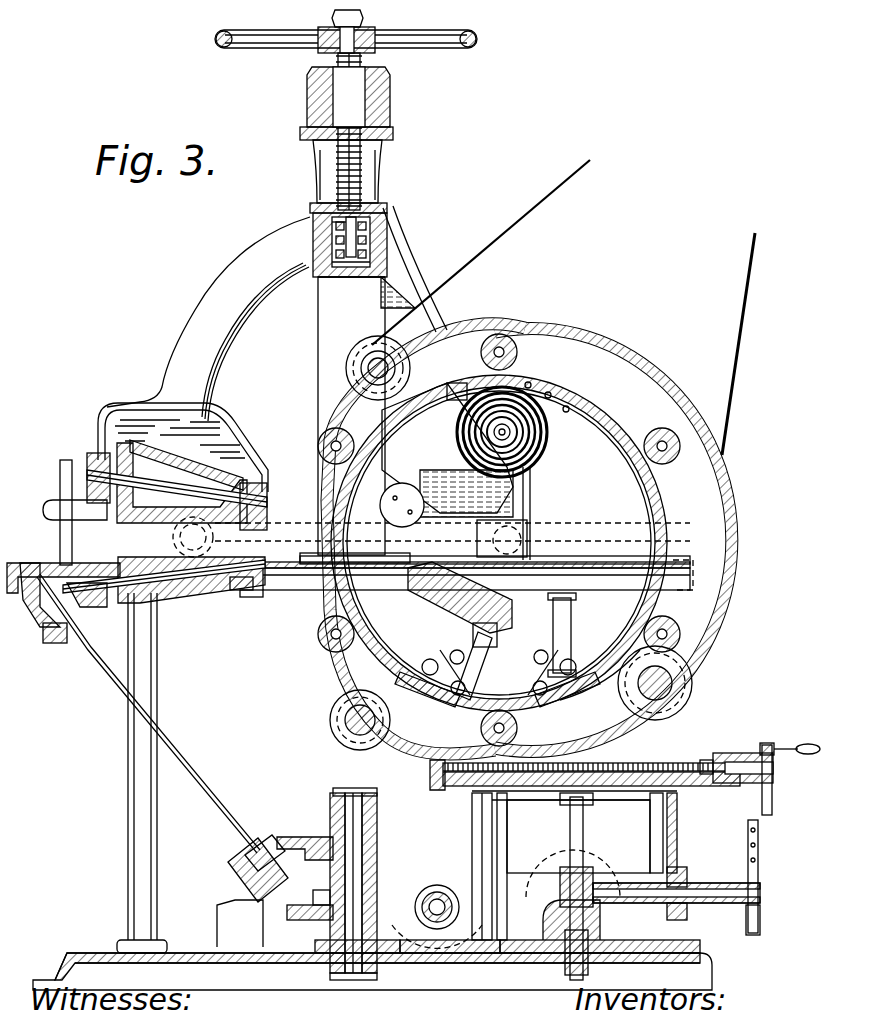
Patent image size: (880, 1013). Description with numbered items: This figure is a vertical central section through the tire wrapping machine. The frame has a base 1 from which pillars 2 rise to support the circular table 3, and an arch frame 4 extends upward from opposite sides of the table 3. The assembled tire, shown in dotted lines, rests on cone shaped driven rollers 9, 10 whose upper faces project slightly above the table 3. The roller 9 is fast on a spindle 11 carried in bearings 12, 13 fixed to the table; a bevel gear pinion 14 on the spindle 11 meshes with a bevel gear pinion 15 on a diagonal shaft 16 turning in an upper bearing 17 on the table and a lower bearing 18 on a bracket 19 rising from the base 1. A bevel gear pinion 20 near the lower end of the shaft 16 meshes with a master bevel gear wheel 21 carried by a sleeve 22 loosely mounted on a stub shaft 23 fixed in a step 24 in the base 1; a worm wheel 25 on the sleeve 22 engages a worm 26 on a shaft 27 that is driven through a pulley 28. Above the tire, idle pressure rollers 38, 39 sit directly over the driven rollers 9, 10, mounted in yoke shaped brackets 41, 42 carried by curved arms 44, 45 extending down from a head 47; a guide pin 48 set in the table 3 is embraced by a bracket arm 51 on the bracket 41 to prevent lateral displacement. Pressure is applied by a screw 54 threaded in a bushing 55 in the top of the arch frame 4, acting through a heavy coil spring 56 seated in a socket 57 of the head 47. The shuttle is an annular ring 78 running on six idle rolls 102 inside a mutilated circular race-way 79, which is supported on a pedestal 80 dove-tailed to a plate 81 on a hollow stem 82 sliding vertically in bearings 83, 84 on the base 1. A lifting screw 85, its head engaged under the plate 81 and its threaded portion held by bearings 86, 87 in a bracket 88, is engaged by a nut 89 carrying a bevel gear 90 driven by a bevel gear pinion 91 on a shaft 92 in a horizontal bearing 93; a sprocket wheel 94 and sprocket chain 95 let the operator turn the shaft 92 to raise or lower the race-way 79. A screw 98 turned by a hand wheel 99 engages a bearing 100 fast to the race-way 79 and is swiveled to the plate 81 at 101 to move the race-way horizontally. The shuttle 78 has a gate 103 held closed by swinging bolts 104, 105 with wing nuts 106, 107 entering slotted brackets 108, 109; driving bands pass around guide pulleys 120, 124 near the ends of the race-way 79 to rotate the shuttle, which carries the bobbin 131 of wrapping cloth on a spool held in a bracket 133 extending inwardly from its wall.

The base 1 is at (85, 953).
The pillars 2 is at (157, 712).
The table 3 is at (560, 565).
The arch frame 4 is at (318, 335).
The cone shaped roller 9 is at (205, 598).
The cone shaped roller 10 is at (462, 600).
The spindle 11 is at (237, 590).
The bearing 12 is at (258, 597).
The bearing 13 is at (105, 605).
The bevel gear pinion 14 is at (70, 570).
The bevel gear pinion 15 is at (58, 643).
The diagonal shaft 16 is at (206, 815).
The bearing 17 is at (35, 615).
The bearing 18 is at (245, 893).
The bracket 19 is at (240, 920).
The bevel gear pinion 20 is at (262, 840).
The master bevel gear wheel 21 is at (300, 840).
The sleeve 22 is at (332, 795).
The stub shaft 23 is at (352, 825).
The step 24 is at (318, 963).
The worm wheel 25 is at (306, 912).
The worm 26 is at (437, 915).
The shaft 27 is at (400, 960).
The pulley 28 is at (455, 786).
The idle pulley 38 is at (200, 472).
The idle pulley 39 is at (453, 513).
The yoke shaped bracket 41 is at (105, 420).
The yoke shaped bracket 42 is at (456, 471).
The curved arm 44 is at (200, 303).
The curved arm 45 is at (422, 272).
The head 47 is at (387, 232).
The guide pin 48 is at (63, 465).
The bracket arm 51 is at (55, 505).
The screw 54 is at (345, 165).
The screw threaded bushing 55 is at (390, 100).
The coil spring 56 is at (322, 277).
The socket 57 is at (336, 246).
The annular ring shuttle 78 is at (640, 408).
The race-way 79 is at (725, 488).
The pedestal 80 is at (630, 765).
The plate 81 is at (668, 790).
The hollow stem 82 is at (650, 818).
The bearing 83 is at (678, 838).
The bearing 84 is at (488, 832).
The lifting screw 85 is at (570, 830).
The bearing 86 is at (565, 888).
The bearing 87 is at (578, 960).
The bracket 88 is at (520, 955).
The nut 89 is at (610, 953).
The bevel gear 90 is at (600, 910).
The bevel gear pinion 91 is at (578, 836).
The shaft 92 is at (760, 890).
The horizontal bearing 93 is at (690, 915).
The sprocket wheel 94 is at (760, 930).
The sprocket chain 95 is at (760, 838).
The screw 98 is at (690, 760).
The hand wheel 99 is at (775, 755).
The bearing 100 is at (440, 765).
The swiveled connection 101 is at (765, 750).
The idle rolls 102 is at (268, 495).
The gate 103 is at (540, 703).
The swinging bolt 104 is at (482, 672).
The swinging bolt 105 is at (545, 662).
The wing nut 106 is at (428, 662).
The wing nut 107 is at (572, 660).
The bracket 108 is at (425, 692).
The bracket 109 is at (585, 690).
The guide pulley 120 is at (370, 355).
The guide pulley 124 is at (333, 726).
The bobbin 131 is at (540, 462).
The bracket 133 is at (535, 383).